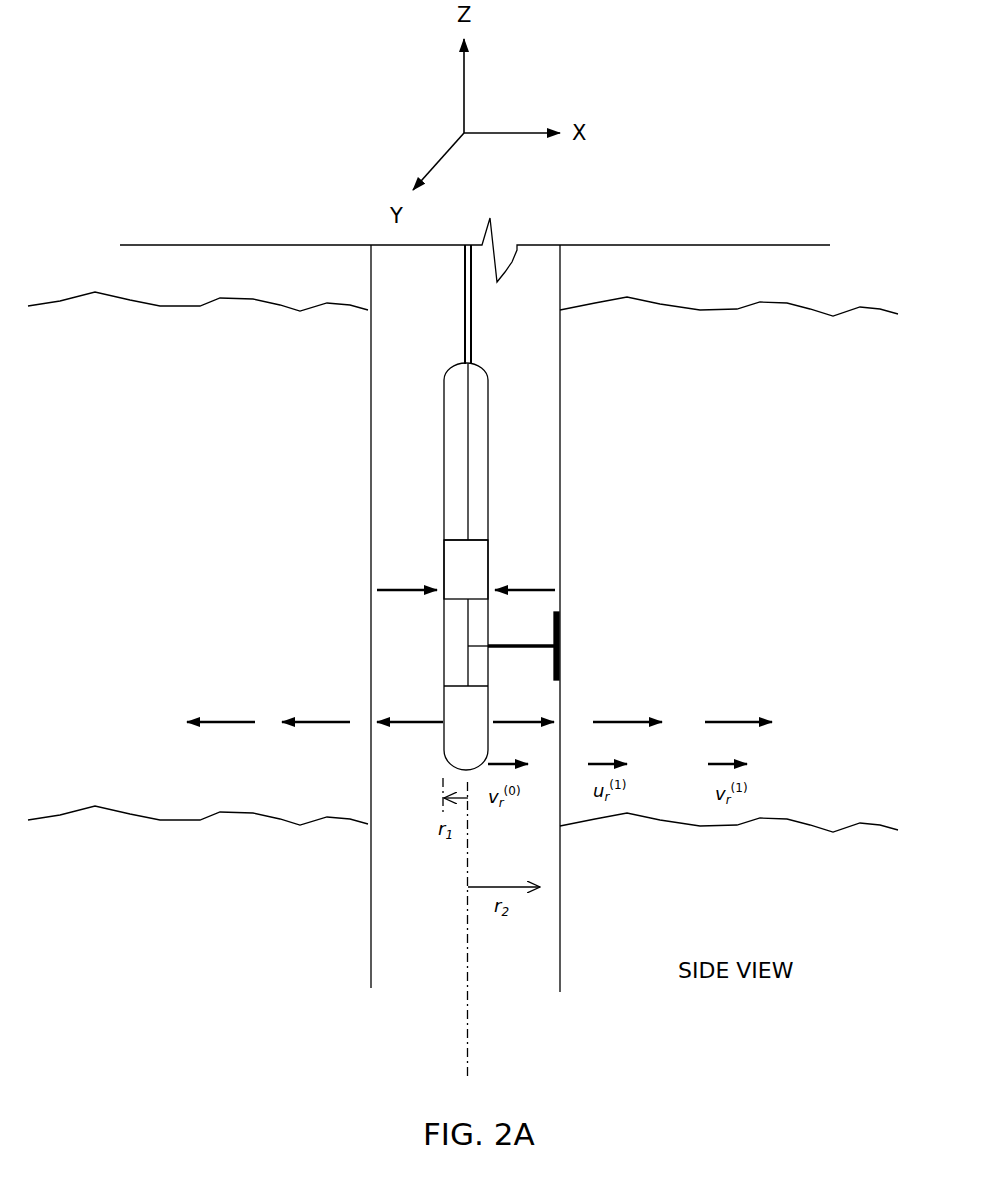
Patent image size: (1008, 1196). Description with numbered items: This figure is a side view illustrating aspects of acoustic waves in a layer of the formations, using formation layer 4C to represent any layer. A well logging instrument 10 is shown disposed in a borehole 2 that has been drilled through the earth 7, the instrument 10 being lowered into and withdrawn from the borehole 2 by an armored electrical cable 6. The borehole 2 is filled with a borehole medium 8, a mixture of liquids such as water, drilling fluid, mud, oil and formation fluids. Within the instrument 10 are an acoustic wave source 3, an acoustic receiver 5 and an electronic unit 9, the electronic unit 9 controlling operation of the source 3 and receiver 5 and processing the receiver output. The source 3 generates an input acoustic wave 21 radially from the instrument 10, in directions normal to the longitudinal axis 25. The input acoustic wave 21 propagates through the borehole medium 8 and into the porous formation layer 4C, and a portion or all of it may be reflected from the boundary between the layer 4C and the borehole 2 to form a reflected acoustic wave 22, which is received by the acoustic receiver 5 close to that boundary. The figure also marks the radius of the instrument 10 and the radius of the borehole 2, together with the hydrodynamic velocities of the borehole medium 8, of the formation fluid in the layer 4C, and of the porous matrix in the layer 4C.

The borehole 2 is at (371, 462).
The acoustic wave source 3 is at (453, 695).
The formation layer 4C is at (157, 418).
The acoustic receiver 5 is at (560, 625).
The armored electrical cable 6 is at (466, 330).
The earth 7 is at (702, 288).
The borehole medium 8 is at (432, 886).
The electronic unit 9 is at (453, 557).
The well logging instrument 10 is at (487, 566).
The input acoustic wave 21 is at (303, 723).
The reflected acoustic wave 22 is at (433, 587).
The longitudinal axis 25 is at (468, 1027).